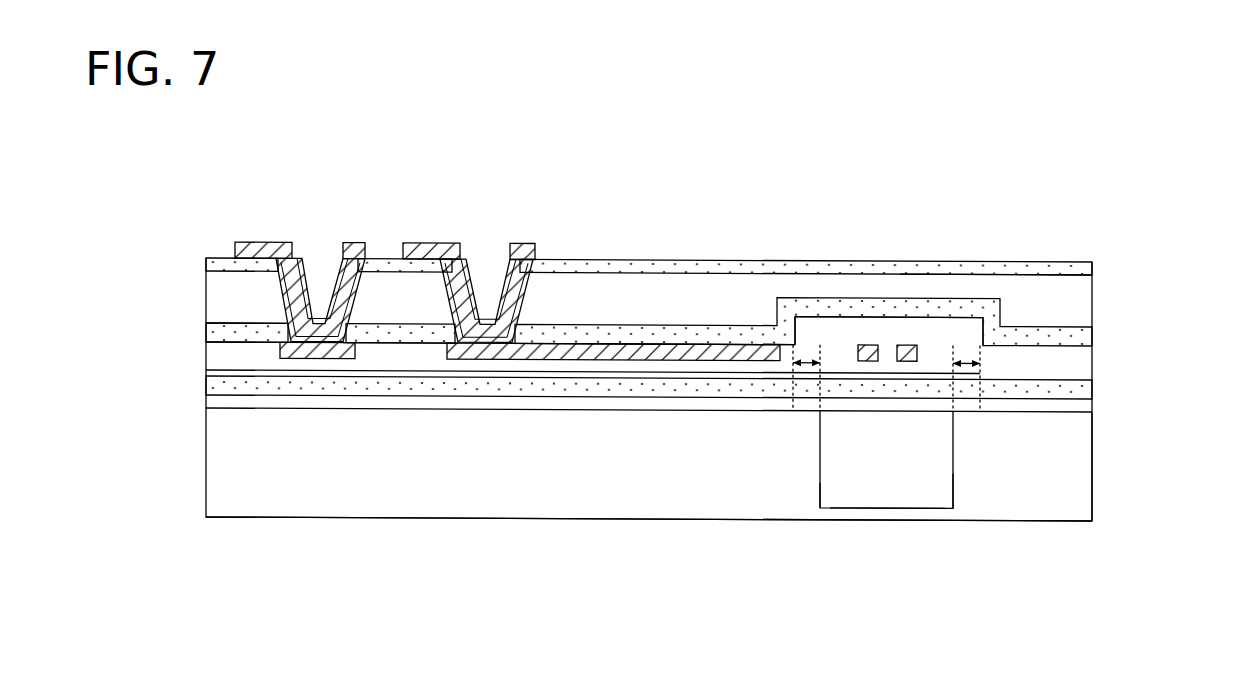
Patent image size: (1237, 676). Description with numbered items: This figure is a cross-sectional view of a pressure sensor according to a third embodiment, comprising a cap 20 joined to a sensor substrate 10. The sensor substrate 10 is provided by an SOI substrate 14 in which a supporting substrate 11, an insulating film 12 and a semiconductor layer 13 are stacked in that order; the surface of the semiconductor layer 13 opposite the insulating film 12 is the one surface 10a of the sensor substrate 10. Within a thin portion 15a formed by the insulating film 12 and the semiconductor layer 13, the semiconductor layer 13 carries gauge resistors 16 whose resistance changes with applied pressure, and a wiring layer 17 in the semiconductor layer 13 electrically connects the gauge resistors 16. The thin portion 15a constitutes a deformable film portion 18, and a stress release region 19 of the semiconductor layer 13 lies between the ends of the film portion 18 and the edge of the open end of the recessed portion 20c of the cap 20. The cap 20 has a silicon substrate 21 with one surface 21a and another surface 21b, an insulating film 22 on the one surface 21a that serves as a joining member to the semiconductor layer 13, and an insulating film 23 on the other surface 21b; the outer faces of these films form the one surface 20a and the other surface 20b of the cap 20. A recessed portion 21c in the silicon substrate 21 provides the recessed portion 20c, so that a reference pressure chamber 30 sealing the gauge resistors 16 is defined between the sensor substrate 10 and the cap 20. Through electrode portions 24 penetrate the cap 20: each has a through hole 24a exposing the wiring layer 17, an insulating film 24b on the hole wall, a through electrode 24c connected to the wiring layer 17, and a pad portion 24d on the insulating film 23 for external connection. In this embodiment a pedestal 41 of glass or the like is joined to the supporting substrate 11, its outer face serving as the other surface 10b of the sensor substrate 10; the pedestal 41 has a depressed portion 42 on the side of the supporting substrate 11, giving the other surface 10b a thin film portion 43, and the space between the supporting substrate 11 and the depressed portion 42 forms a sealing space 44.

The sensor substrate 10 is at (188, 436).
The one surface of the sensor substrate 10a is at (217, 340).
The other surface of the sensor substrate 10b is at (223, 512).
The supporting substrate 11 is at (1080, 402).
The insulating film 12 is at (1080, 384).
The semiconductor layer 13 is at (1080, 366).
The SOI substrate 14 is at (714, 401).
The thin portion 15a is at (886, 460).
The gauge resistors 16 is at (875, 345).
The wiring layer 17 is at (623, 346).
The film portion 18 is at (889, 498).
The stress release region 19 is at (809, 364).
The cap 20 is at (647, 275).
The one surface of the cap 20a is at (240, 336).
The other surface of the cap 20b is at (233, 246).
The recessed portion of the cap 20c is at (810, 316).
The silicon substrate 21 is at (855, 275).
The one surface of the silicon substrate 21a is at (1075, 326).
The other surface of the silicon substrate 21b is at (1073, 269).
The recessed portion of the silicon substrate 21c is at (975, 322).
The insulating film 22 is at (1078, 348).
The insulating film 23 is at (1080, 259).
The through electrode portions 24 is at (400, 236).
The through hole 24a is at (520, 292).
The insulating film 24b is at (492, 289).
The through electrode 24c is at (404, 263).
The pad portion 24d is at (418, 243).
The reference pressure chamber 30 is at (908, 328).
The pedestal 41 is at (1080, 476).
The depressed portion 42 is at (953, 472).
The film portion 43 is at (858, 512).
The sealing space 44 is at (838, 482).